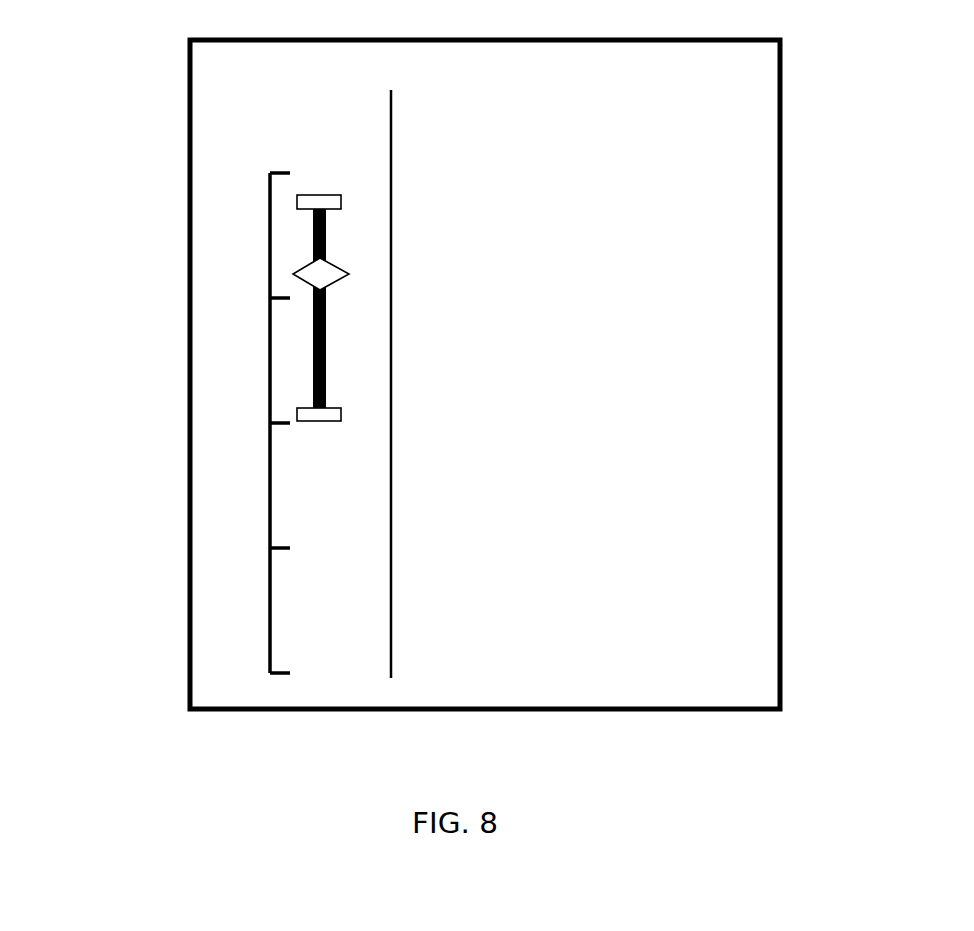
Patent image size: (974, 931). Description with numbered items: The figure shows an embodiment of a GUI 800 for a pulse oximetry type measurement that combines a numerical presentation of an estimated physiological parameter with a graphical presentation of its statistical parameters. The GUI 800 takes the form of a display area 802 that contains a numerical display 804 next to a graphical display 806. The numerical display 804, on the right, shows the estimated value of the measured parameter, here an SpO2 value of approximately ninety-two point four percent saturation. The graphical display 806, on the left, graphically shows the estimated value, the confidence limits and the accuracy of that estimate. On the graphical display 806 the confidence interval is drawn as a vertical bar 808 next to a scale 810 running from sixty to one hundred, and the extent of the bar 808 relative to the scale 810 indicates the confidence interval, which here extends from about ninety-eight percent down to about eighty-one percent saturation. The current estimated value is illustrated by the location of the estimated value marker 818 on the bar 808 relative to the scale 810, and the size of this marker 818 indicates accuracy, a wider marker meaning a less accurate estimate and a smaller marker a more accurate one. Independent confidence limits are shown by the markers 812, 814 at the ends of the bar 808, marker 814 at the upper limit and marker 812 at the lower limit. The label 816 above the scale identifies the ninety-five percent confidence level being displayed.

The GUI 800 is at (504, 374).
The display area 802 is at (188, 522).
The numerical display 804 is at (720, 318).
The graphical display 806 is at (248, 460).
The bar 808 is at (198, 316).
The scale 810 is at (233, 580).
The marker 812 is at (297, 411).
The marker 814 is at (297, 200).
The confidence level label 816 is at (228, 113).
The estimated value marker 818 is at (293, 274).